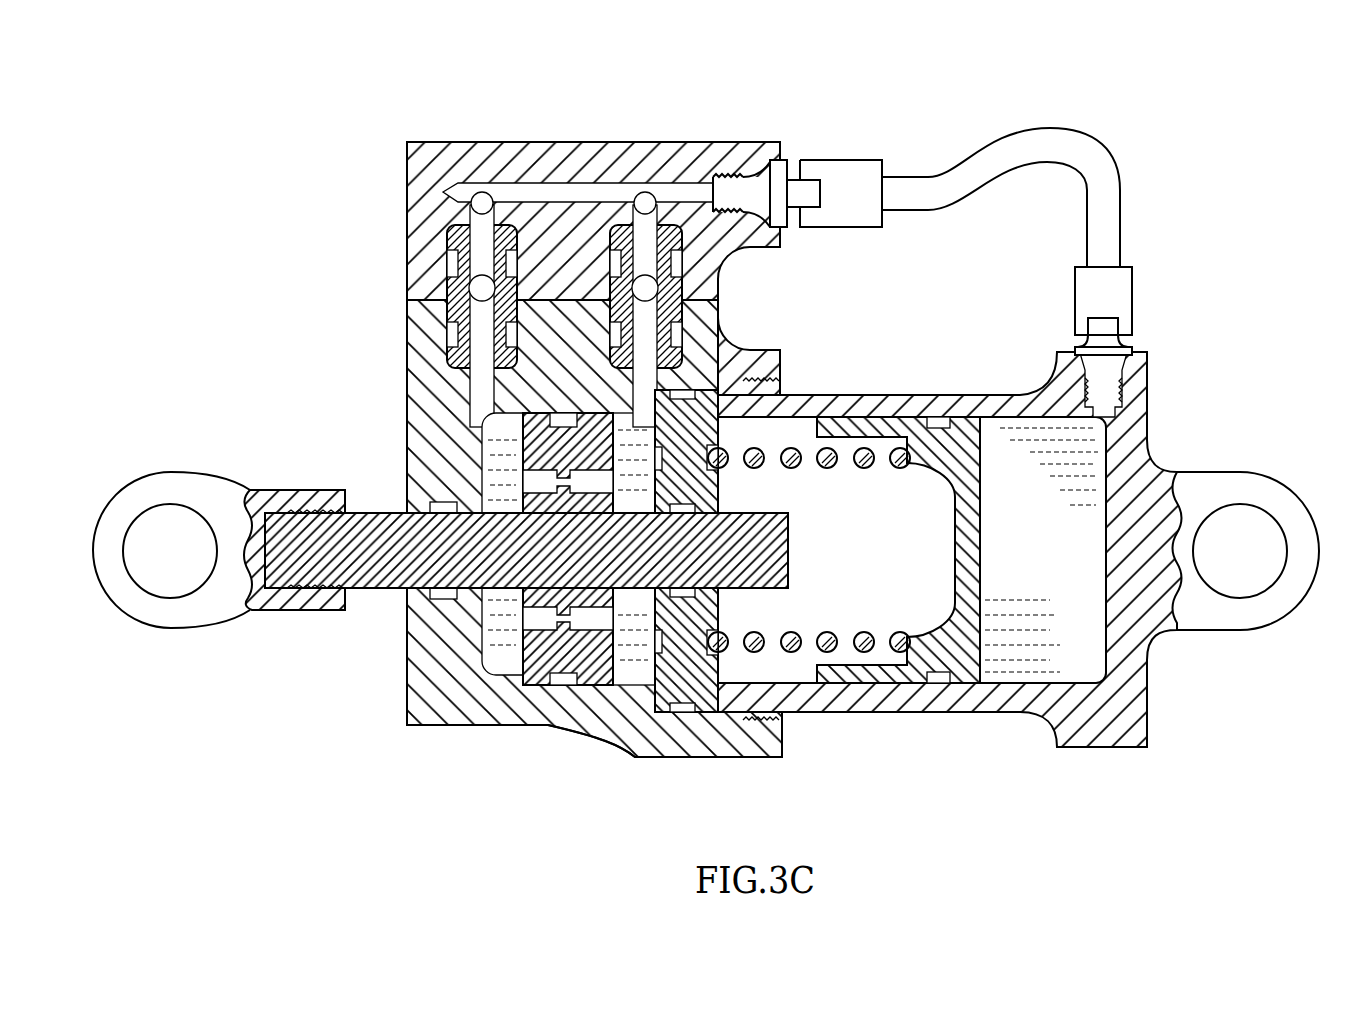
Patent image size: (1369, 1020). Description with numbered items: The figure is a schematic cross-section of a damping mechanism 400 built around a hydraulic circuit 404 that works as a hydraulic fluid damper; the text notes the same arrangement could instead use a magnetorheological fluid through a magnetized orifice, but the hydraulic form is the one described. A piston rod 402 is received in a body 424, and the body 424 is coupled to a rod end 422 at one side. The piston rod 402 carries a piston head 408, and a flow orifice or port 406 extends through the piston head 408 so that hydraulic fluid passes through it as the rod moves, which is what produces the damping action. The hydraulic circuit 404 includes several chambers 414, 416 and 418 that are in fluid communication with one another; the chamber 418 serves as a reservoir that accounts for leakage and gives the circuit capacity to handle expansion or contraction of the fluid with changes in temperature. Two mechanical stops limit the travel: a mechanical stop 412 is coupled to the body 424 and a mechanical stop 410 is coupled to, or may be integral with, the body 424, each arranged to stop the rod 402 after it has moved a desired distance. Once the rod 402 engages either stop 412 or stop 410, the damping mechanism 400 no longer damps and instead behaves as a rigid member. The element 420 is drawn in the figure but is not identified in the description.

The damping mechanism 400 is at (316, 200).
The piston rod 402 is at (380, 512).
The hydraulic circuit 404 is at (893, 118).
The flow orifice 406 is at (528, 615).
The piston head 408 is at (530, 662).
The mechanical stop 410 is at (430, 660).
The mechanical stop 412 is at (718, 672).
The chamber 414 is at (503, 440).
The chamber 416 is at (645, 425).
The chamber 418 is at (1037, 463).
The cylinder 420 is at (890, 713).
The rod end 422 is at (1148, 675).
The body 424 is at (550, 727).